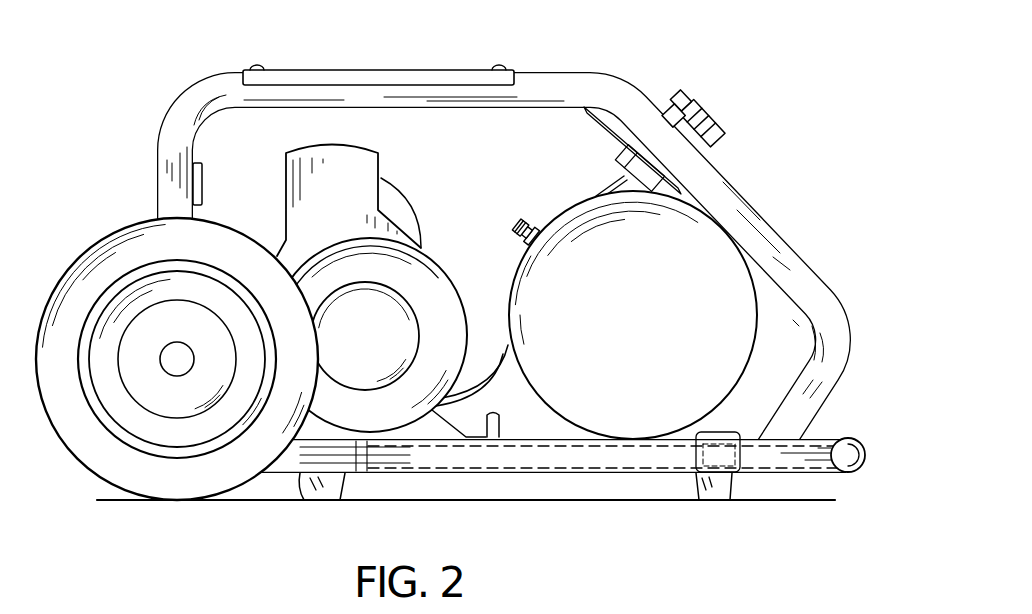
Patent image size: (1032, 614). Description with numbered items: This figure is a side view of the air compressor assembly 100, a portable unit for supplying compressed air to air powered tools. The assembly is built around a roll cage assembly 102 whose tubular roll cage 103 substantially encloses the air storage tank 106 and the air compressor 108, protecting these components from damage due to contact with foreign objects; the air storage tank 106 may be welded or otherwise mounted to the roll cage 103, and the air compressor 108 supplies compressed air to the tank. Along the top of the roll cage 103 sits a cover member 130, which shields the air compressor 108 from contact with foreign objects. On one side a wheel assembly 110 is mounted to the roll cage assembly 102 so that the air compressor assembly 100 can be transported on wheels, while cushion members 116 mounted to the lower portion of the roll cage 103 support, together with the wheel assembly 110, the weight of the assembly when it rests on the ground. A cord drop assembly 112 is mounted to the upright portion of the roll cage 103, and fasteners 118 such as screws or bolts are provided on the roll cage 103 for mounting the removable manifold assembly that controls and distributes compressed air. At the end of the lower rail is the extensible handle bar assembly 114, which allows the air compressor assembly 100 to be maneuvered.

The air compressor assembly 100 is at (472, 290).
The roll cage assembly 102 is at (798, 248).
The roll cage 103 is at (831, 315).
The air storage tank 106 is at (651, 322).
The air compressor 108 is at (396, 348).
The wheel assembly 110 is at (72, 435).
The cord drop assembly 112 is at (198, 193).
The extensible handle bar assembly 114 is at (861, 472).
The cushion members 116 is at (312, 498).
The fasteners 118 is at (696, 106).
The cover member 130 is at (372, 72).